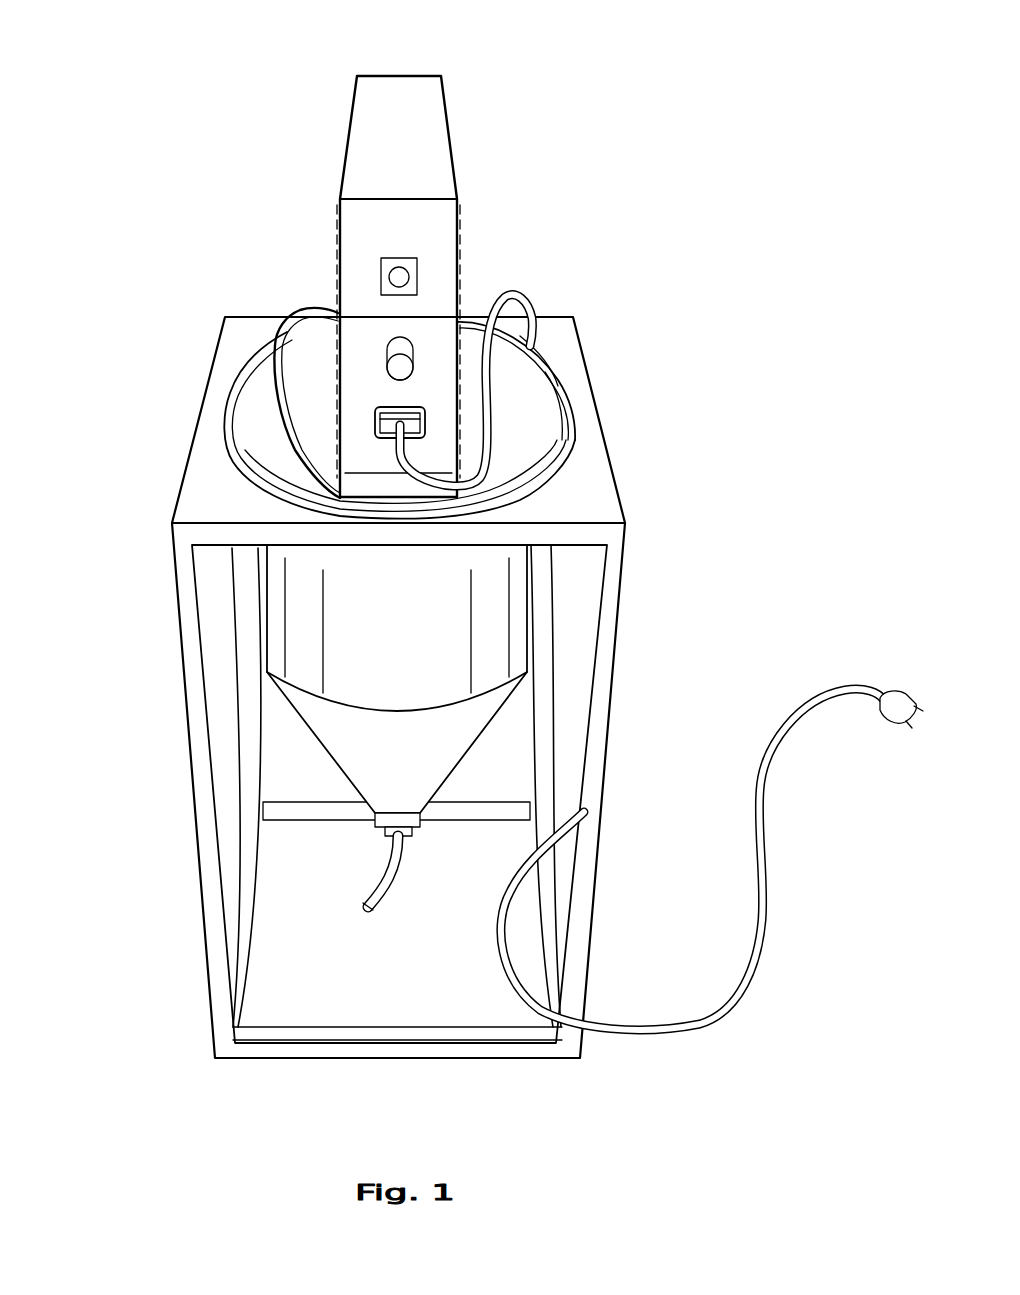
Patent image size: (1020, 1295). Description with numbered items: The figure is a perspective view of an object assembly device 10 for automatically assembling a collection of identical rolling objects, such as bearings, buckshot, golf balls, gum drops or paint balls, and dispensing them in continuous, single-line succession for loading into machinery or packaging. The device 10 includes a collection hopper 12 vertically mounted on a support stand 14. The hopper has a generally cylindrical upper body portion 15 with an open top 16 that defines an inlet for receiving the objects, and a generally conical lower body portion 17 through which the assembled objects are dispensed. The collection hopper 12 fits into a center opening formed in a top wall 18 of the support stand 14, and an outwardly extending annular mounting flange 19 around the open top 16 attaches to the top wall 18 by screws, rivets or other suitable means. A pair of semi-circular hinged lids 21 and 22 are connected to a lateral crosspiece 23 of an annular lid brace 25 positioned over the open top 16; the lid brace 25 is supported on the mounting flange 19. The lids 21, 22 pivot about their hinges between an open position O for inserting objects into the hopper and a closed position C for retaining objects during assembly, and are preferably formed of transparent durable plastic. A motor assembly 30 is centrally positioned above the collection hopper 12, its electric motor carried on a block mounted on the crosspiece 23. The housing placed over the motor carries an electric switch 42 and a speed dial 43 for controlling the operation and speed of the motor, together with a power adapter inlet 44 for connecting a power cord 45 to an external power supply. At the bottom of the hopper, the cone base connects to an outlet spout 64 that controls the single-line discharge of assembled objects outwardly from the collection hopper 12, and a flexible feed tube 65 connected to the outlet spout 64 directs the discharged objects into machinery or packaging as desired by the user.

The object assembly device 10 is at (128, 172).
The collection hopper 12 is at (293, 743).
The support stand 14 is at (625, 625).
The upper body portion 15 is at (390, 639).
The open top 16 is at (236, 440).
The lower body portion 17 is at (390, 770).
The top wall 18 is at (567, 345).
The mounting flange 19 is at (577, 432).
The hinged lid 21 is at (308, 330).
The hinged lid 22 is at (527, 380).
The lateral crosspiece 23 is at (372, 482).
The annular lid brace 25 is at (260, 477).
The motor assembly 30 is at (478, 145).
The electric switch 42 is at (381, 268).
The speed dial 43 is at (408, 345).
The power adapter inlet 44 is at (417, 405).
The power cord 45 is at (773, 757).
The outlet spout 64 is at (413, 824).
The flexible feed tube 65 is at (380, 864).
The open position O is at (298, 358).
The closed position C is at (530, 440).